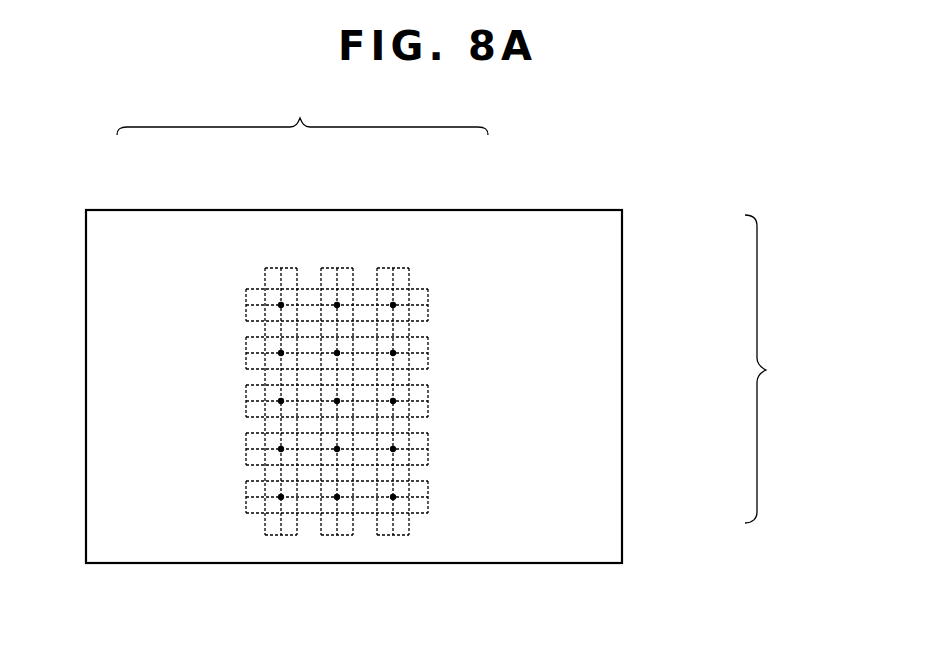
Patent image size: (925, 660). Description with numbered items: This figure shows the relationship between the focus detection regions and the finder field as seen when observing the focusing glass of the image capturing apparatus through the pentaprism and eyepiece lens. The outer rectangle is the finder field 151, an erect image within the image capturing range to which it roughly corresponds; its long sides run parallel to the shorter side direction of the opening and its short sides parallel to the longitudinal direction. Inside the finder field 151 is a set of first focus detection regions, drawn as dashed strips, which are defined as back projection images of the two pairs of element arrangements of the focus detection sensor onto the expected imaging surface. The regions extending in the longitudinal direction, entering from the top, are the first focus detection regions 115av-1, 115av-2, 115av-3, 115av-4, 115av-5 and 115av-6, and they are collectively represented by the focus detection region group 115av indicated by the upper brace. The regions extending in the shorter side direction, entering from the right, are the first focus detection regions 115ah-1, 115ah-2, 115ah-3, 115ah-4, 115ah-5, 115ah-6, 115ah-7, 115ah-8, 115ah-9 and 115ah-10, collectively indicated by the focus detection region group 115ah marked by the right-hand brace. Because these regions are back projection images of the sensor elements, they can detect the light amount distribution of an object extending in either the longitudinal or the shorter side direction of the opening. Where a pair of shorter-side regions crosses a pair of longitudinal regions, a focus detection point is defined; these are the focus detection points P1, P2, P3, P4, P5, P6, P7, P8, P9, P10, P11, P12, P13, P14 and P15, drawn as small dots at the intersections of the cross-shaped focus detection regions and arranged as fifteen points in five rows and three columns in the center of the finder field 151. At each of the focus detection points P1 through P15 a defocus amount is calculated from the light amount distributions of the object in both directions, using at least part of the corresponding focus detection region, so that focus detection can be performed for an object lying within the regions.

The finder field 151 is at (497, 210).
The focus detection region group 115av is at (302, 112).
The first focus detection region 115av-1 is at (265, 268).
The first focus detection region 115av-2 is at (297, 268).
The first focus detection region 115av-3 is at (321, 268).
The first focus detection region 115av-4 is at (353, 268).
The first focus detection region 115av-5 is at (377, 268).
The first focus detection region 115av-6 is at (409, 268).
The focus detection region group 115ah is at (790, 369).
The first focus detection region 115ah-1 is at (428, 289).
The first focus detection region 115ah-2 is at (428, 305).
The first focus detection region 115ah-3 is at (428, 337).
The first focus detection region 115ah-4 is at (428, 353).
The first focus detection region 115ah-5 is at (428, 385).
The first focus detection region 115ah-6 is at (428, 401).
The first focus detection region 115ah-7 is at (428, 433).
The first focus detection region 115ah-8 is at (428, 449).
The first focus detection region 115ah-9 is at (428, 481).
The first focus detection region 115ah-10 is at (428, 497).
The focus detection point P1 is at (281, 305).
The focus detection point P2 is at (281, 353).
The focus detection point P3 is at (281, 401).
The focus detection point P4 is at (281, 449).
The focus detection point P5 is at (281, 497).
The focus detection point P6 is at (337, 305).
The focus detection point P7 is at (337, 353).
The focus detection point P8 is at (337, 401).
The focus detection point P9 is at (337, 449).
The focus detection point P10 is at (337, 497).
The focus detection point P11 is at (393, 305).
The focus detection point P12 is at (393, 353).
The focus detection point P13 is at (393, 401).
The focus detection point P14 is at (393, 449).
The focus detection point P15 is at (393, 497).